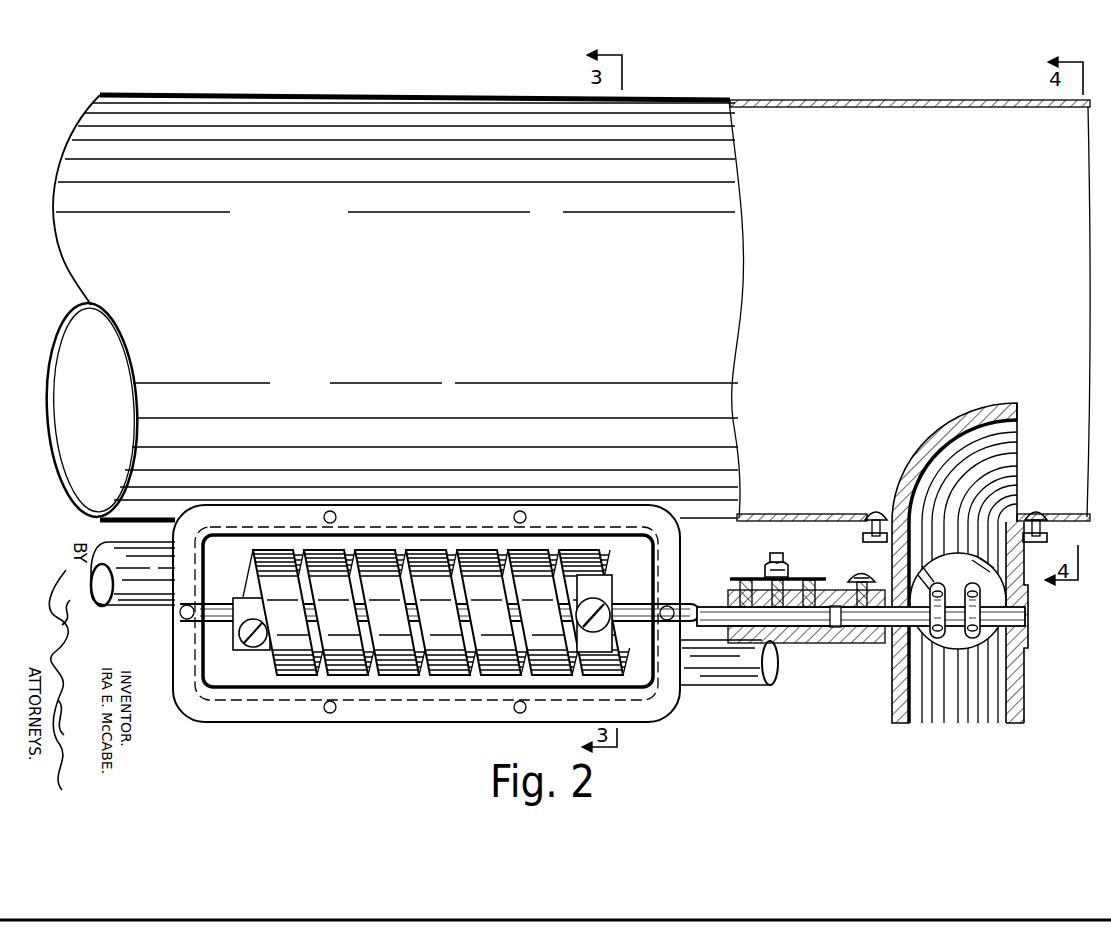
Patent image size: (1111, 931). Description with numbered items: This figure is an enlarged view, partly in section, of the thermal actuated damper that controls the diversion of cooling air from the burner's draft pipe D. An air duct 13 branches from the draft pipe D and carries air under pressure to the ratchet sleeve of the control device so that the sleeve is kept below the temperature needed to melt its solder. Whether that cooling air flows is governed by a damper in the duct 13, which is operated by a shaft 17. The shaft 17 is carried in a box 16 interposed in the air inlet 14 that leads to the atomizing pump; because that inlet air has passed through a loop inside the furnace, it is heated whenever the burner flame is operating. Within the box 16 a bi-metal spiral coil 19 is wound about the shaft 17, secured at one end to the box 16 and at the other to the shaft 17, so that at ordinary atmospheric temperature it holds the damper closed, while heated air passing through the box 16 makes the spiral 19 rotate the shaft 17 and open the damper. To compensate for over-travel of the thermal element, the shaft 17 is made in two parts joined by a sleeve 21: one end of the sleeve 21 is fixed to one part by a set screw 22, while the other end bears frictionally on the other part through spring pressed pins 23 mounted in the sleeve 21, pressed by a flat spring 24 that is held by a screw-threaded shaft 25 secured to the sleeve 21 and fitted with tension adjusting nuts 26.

The draft pipe D is at (82, 268).
The air duct 13 is at (1013, 667).
The air inlet 14 is at (150, 592).
The box 16 is at (187, 645).
The shaft 17 is at (684, 604).
The bi-metal spiral coil 19 is at (580, 658).
The sleeve 21 is at (843, 643).
The set screw 22 is at (863, 574).
The spring pressed pins 23 is at (740, 584).
The flat spring 24 is at (797, 577).
The screw-threaded shaft 25 is at (776, 554).
The bolt head 26 is at (768, 572).